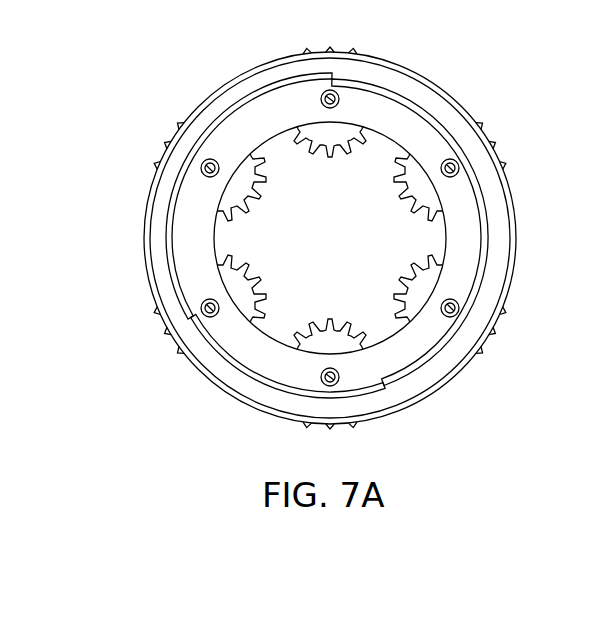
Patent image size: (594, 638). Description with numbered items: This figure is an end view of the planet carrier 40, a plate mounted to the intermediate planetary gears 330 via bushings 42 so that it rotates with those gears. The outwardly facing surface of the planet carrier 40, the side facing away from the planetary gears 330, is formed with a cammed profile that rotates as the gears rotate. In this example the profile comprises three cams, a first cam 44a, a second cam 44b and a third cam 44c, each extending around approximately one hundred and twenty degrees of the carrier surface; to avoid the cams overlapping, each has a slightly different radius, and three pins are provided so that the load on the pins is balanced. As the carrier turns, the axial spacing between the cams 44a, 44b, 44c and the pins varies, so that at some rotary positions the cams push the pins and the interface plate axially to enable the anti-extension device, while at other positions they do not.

The planet carrier 40 is at (433, 85).
The bushings 42 is at (518, 247).
The first cam 44a is at (453, 140).
The second cam 44b is at (218, 120).
The third cam 44c is at (227, 360).
The planetary gears 330 is at (255, 202).